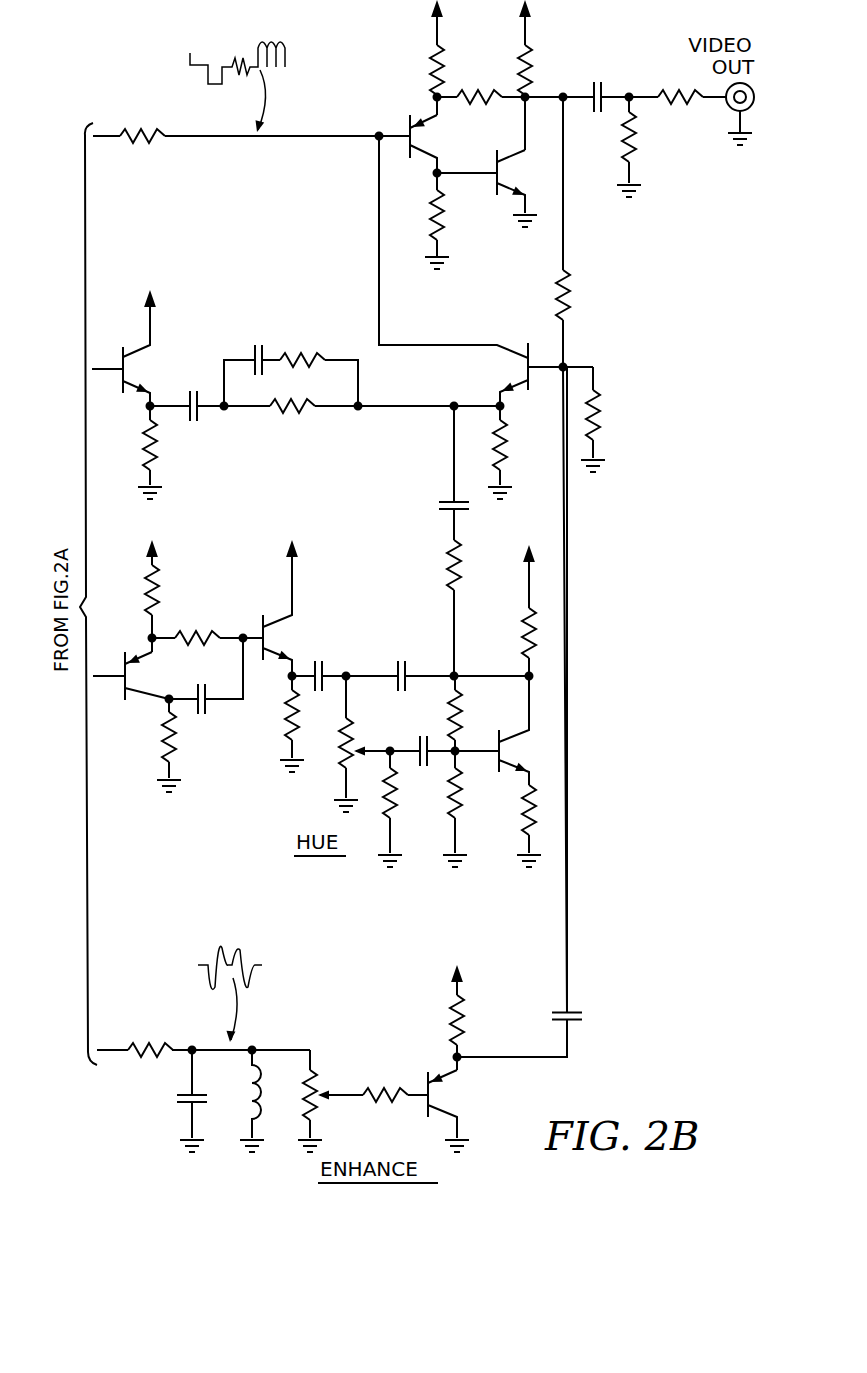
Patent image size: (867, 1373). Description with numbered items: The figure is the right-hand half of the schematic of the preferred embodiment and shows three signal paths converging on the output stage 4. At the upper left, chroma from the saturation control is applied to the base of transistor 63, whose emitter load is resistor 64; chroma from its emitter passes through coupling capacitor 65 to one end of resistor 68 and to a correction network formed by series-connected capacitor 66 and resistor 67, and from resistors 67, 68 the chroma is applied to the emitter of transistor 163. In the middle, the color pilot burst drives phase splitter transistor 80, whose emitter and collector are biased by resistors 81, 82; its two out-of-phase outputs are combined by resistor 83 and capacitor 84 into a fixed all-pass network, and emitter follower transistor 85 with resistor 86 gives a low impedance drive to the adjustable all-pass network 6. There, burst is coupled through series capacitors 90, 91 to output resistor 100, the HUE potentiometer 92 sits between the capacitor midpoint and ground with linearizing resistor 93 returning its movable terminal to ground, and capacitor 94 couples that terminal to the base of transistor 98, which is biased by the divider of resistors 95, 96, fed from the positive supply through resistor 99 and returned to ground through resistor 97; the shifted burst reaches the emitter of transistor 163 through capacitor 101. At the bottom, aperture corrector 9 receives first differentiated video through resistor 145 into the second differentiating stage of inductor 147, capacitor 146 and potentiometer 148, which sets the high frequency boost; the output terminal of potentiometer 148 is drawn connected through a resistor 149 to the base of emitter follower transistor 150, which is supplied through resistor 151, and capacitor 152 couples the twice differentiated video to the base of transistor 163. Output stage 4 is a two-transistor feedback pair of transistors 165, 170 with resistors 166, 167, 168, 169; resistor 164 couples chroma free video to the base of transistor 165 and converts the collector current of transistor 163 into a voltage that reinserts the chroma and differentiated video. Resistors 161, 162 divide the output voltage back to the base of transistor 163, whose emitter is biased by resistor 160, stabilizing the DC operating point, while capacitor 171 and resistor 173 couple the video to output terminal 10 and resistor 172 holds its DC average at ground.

The output stage 4 is at (386, 60).
The adjustable all-pass network 6 is at (375, 573).
The aperture corrector 9 is at (162, 969).
The output terminal 10 is at (730, 117).
The transistor 63 is at (118, 362).
The emitter load resistor 64 is at (157, 445).
The coupling capacitor 65 is at (213, 385).
The capacitor 66 is at (265, 352).
The resistor 67 is at (322, 352).
The resistor 68 is at (295, 418).
The phase splitter transistor 80 is at (140, 700).
The resistor 81 is at (178, 735).
The resistor 82 is at (160, 612).
The resistor 83 is at (195, 635).
The capacitor 84 is at (195, 692).
The transistor 85 is at (280, 628).
The resistor 86 is at (285, 708).
The capacitor 90 is at (318, 668).
The capacitor 91 is at (408, 668).
The potentiometer 92 is at (330, 765).
The linearizing resistor 93 is at (400, 812).
The capacitor 94 is at (430, 765).
The resistor 95 is at (448, 727).
The resistor 96 is at (463, 815).
The resistor 97 is at (522, 812).
The transistor 98 is at (512, 733).
The resistor 99 is at (522, 640).
The output resistor 100 is at (465, 570).
The capacitor 101 is at (447, 500).
The resistor 145 is at (165, 1042).
The capacitor 146 is at (185, 1108).
The inductor 147 is at (248, 1095).
The potentiometer 148 is at (322, 1083).
The resistor 149 is at (390, 1103).
The emitter follower transistor 150 is at (445, 1082).
The resistor 151 is at (470, 1022).
The capacitor 152 is at (575, 1010).
The resistor 160 is at (508, 440).
The resistor 161 is at (572, 305).
The resistor 162 is at (604, 418).
The transistor 163 is at (540, 345).
The resistor 164 is at (148, 125).
The transistor 165 is at (405, 125).
The resistor 166 is at (425, 222).
The resistor 167 is at (448, 70).
The resistor 168 is at (488, 105).
The resistor 169 is at (538, 70).
The transistor 170 is at (495, 190).
The capacitor 171 is at (592, 108).
The resistor 172 is at (640, 148).
The resistor 173 is at (688, 85).